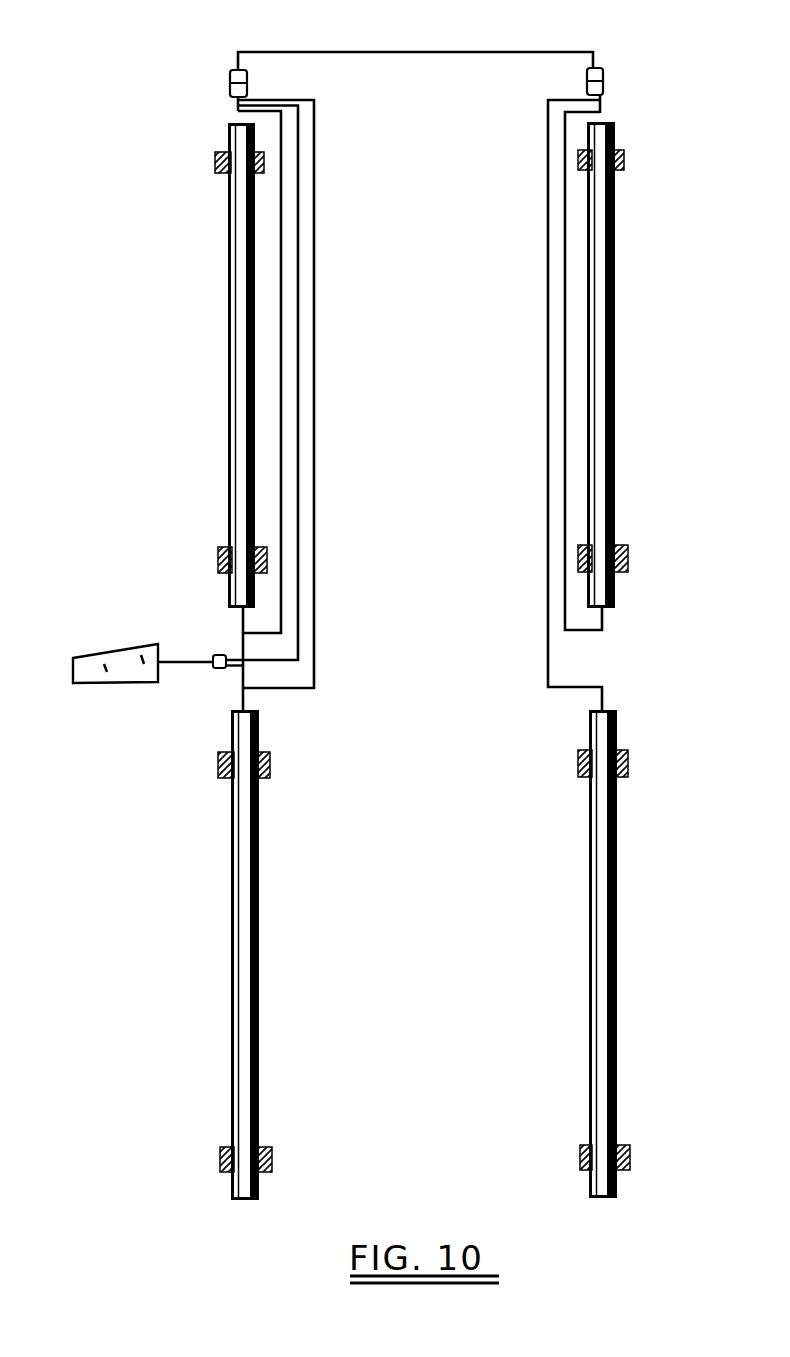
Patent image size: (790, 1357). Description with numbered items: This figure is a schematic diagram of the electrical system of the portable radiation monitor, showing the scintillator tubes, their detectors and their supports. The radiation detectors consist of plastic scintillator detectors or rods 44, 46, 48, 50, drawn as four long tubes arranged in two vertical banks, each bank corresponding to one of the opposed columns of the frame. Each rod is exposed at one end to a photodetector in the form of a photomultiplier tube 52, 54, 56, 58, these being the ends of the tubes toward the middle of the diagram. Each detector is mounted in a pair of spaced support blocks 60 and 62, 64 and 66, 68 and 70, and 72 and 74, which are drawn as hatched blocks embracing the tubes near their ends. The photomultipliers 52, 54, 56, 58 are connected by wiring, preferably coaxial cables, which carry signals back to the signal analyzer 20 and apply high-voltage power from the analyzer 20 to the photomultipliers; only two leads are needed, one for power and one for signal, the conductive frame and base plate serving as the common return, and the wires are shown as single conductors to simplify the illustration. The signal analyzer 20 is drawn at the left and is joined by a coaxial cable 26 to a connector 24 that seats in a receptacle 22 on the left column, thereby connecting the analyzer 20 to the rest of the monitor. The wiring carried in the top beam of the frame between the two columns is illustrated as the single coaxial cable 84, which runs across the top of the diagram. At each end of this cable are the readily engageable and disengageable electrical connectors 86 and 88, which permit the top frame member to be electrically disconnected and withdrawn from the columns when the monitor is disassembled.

The signal analyzer 20 is at (93, 683).
The receptacle 22 is at (223, 668).
The connector 24 is at (216, 655).
The coaxial cable 26 is at (178, 664).
The plastic scintillator detector 44 is at (606, 936).
The plastic scintillator detector 46 is at (604, 386).
The plastic scintillator detector 48 is at (238, 934).
The plastic scintillator detector 50 is at (236, 390).
The photomultiplier tube 52 is at (612, 595).
The photomultiplier tube 54 is at (617, 722).
The photomultiplier tube 56 is at (243, 595).
The photomultiplier tube 58 is at (259, 728).
The support block 60 is at (628, 548).
The support block 62 is at (624, 160).
The support block 64 is at (632, 1150).
The support block 66 is at (628, 760).
The support block 68 is at (272, 1150).
The support block 70 is at (270, 763).
The support block 72 is at (220, 553).
The support block 74 is at (215, 160).
The coaxial cable 84 is at (380, 52).
The electrical connector 86 is at (230, 78).
The electrical connector 88 is at (603, 78).